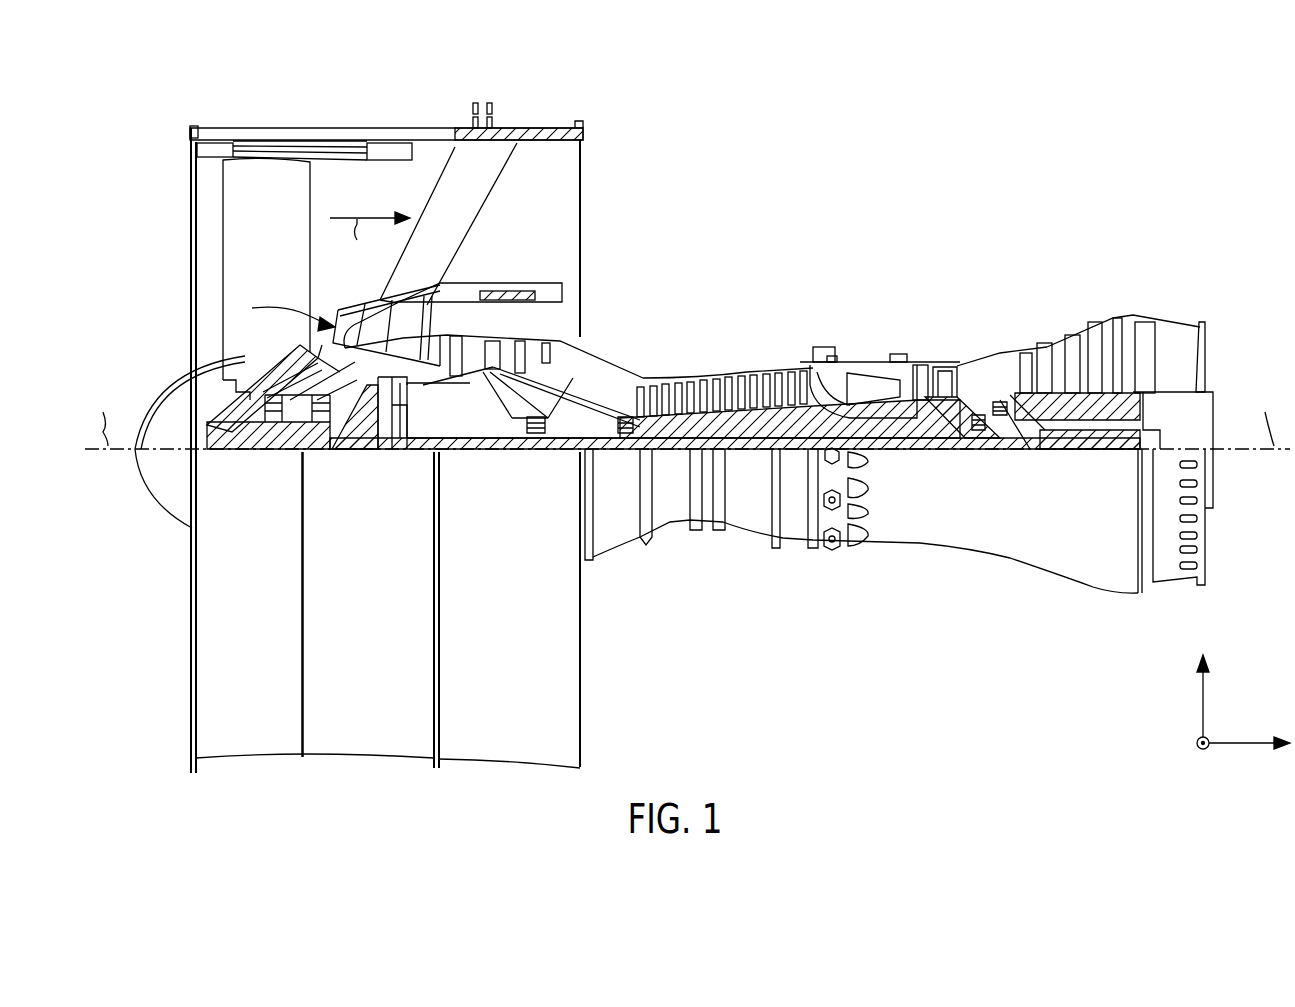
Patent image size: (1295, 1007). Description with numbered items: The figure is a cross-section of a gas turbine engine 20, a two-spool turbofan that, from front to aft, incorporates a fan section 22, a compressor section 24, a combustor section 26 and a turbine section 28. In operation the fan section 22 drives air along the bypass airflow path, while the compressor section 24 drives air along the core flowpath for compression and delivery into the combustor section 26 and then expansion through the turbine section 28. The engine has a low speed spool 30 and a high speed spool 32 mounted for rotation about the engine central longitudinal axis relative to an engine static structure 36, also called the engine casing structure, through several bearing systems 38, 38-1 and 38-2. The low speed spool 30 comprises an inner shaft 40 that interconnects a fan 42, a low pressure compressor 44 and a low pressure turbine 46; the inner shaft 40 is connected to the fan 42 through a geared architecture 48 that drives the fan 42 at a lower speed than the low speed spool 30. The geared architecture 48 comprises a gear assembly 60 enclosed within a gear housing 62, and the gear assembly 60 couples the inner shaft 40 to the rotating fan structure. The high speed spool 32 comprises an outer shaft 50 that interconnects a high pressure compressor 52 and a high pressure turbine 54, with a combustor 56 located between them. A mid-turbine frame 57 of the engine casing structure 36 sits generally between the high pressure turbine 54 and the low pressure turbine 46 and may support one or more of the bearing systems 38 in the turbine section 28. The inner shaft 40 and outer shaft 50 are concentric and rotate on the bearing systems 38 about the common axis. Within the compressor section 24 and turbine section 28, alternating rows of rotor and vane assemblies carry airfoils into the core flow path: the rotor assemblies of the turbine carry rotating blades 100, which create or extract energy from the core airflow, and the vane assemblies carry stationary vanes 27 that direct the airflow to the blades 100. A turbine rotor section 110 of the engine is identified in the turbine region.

The gas turbine engine 20 is at (823, 146).
The fan section 22 is at (432, 112).
The compressor section 24 is at (443, 248).
The combustor section 26 is at (818, 248).
The turbine section 28 is at (1145, 248).
The stationary vanes 27 is at (1058, 338).
The low speed spool 30 is at (755, 454).
The high speed spool 32 is at (807, 372).
The engine static structure 36 is at (900, 520).
The bearing system 38 is at (986, 412).
The bearing system 38-1 is at (282, 440).
The bearing system 38-2 is at (530, 450).
The inner shaft 40 is at (602, 453).
The fan 42 is at (276, 262).
The low pressure compressor 44 is at (520, 348).
The low pressure turbine 46 is at (1080, 313).
The geared architecture 48 is at (387, 486).
The outer shaft 50 is at (872, 438).
The high pressure compressor 52 is at (748, 380).
The high pressure turbine 54 is at (942, 365).
The combustor 56 is at (880, 378).
The mid-turbine frame 57 is at (995, 358).
The gear assembly 60 is at (410, 412).
The gear housing 62 is at (412, 392).
The rotating blades 100 is at (962, 376).
The turbine rotor section 110 is at (1137, 318).